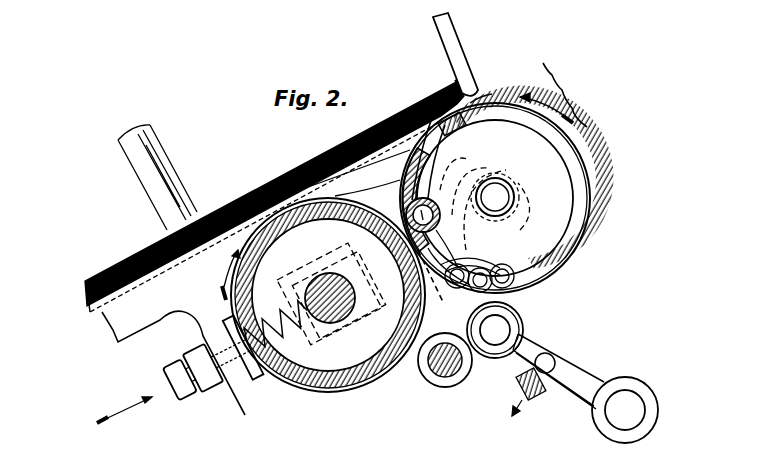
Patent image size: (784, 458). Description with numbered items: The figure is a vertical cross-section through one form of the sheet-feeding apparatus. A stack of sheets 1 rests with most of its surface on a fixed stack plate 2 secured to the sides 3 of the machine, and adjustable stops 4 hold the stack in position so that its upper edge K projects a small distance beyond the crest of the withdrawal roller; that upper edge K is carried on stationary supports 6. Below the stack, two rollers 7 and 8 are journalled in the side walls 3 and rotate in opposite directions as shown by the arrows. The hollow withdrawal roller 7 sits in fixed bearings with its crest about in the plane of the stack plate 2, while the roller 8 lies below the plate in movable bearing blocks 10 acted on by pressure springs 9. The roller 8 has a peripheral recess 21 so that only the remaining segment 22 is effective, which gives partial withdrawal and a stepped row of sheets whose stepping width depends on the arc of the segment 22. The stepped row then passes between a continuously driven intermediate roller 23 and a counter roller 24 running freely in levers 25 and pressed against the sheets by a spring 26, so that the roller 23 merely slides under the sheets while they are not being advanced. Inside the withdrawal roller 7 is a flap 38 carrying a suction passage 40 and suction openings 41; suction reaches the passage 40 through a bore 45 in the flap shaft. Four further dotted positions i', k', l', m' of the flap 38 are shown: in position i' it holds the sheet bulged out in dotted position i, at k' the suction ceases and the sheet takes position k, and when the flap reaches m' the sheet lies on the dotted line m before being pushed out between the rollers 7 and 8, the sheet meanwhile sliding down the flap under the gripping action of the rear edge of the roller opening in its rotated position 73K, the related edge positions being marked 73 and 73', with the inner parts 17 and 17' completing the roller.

The stack of sheets 1 is at (371, 123).
The stack plate 2 is at (95, 310).
The sides of the machine 3 is at (118, 336).
The adjustable stops 4 is at (168, 167).
The supports 6 is at (461, 44).
The withdrawal roller 7 is at (590, 216).
The roller 8 is at (333, 378).
The pressure springs 9 is at (288, 342).
The bearing blocks 10 is at (350, 334).
The drum shell 17 is at (515, 198).
The shaft ring 17' is at (512, 197).
The recess 21 is at (383, 386).
The segment 22 is at (240, 303).
The intermediate roller 23 is at (445, 388).
The roller 24 is at (521, 317).
The levers 25 is at (572, 366).
The spring 26 is at (533, 396).
The flap 38 is at (420, 185).
The suction passage 40 is at (466, 121).
The suction openings 41 is at (430, 92).
The bore 45 is at (425, 228).
The sheet 73 is at (536, 90).
The sheet edge 73' is at (491, 84).
The sheet edge 73K is at (355, 173).
The upper edge of the stack K is at (455, 82).
The dotted position of the sheet i is at (409, 208).
The position of the flap i' is at (457, 161).
The dotted position of the sheet k is at (372, 179).
The position of the flap k' is at (478, 176).
The dotted line position of the sheet m is at (448, 236).
The position of the flap m' is at (499, 196).
The position of the flap l' is at (529, 194).